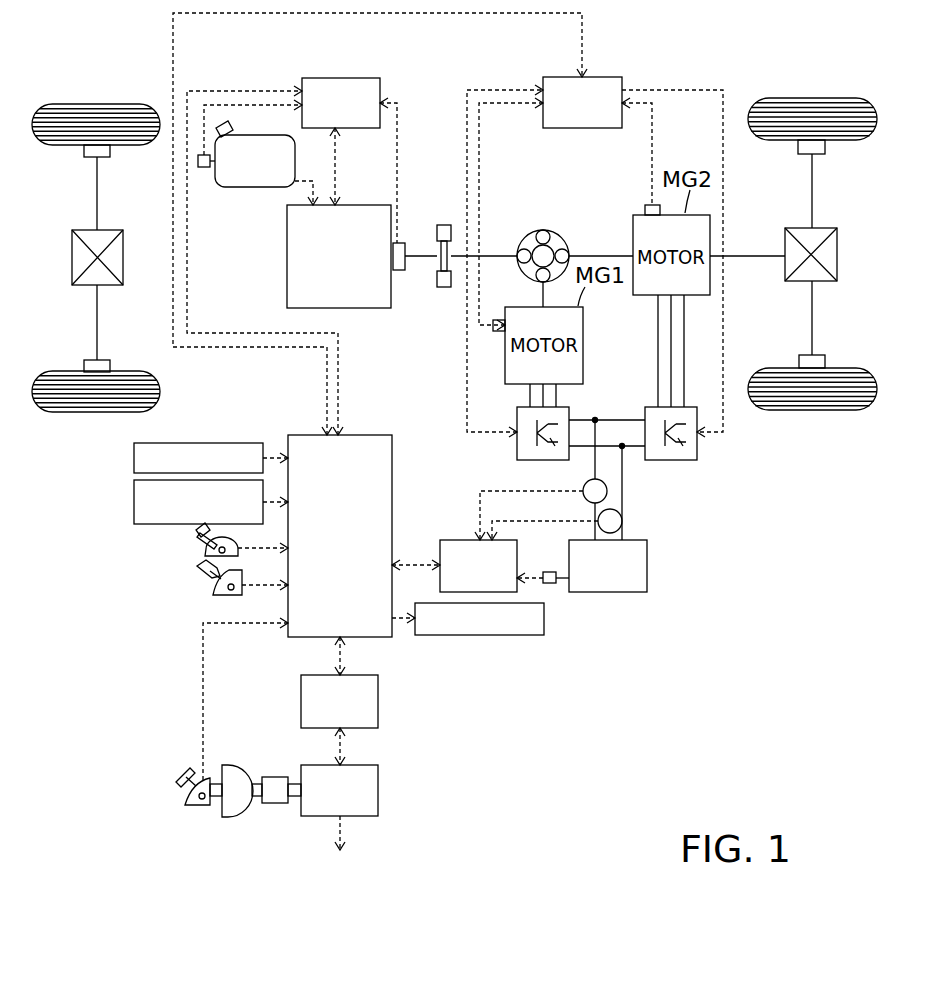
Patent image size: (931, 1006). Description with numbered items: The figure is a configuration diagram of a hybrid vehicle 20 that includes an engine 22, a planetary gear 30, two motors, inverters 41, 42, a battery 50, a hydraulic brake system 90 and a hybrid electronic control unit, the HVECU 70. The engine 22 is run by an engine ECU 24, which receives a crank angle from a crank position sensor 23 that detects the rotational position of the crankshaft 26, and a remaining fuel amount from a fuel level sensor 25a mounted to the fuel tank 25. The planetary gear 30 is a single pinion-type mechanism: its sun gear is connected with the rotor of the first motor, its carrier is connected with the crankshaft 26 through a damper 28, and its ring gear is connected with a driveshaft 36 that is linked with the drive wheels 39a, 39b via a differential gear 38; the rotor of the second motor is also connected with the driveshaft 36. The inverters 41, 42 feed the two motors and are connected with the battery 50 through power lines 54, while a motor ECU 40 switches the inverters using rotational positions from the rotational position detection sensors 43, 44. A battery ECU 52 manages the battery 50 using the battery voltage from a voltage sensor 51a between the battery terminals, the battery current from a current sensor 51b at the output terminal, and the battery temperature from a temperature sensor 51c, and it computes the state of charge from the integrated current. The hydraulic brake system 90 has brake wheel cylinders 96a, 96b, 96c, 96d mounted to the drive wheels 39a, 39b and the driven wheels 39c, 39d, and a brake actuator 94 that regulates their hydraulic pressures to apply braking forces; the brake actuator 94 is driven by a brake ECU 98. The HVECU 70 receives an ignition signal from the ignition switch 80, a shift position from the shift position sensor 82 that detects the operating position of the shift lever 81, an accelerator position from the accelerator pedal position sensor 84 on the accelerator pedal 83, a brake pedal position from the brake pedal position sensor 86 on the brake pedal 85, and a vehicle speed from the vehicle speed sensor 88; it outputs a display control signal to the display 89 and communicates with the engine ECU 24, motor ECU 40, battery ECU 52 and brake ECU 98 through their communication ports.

The hybrid vehicle 20 is at (711, 50).
The engine 22 is at (368, 204).
The crank position sensor 23 is at (398, 272).
The engine ECU 24 is at (341, 77).
The fuel tank 25 is at (257, 188).
The fuel level sensor 25a is at (205, 168).
The crankshaft 26 is at (416, 250).
The damper 28 is at (444, 224).
The planetary gear 30 is at (545, 230).
The driveshaft 36 is at (763, 253).
The differential gear 38 is at (824, 228).
The drive wheel 39a is at (813, 97).
The drive wheel 39b is at (811, 411).
The driven wheel 39c is at (98, 103).
The driven wheel 39d is at (93, 413).
The motor ECU 40 is at (596, 76).
The inverter 41 is at (570, 406).
The inverter 42 is at (692, 406).
The rotational position detection sensor 43 is at (500, 319).
The rotational position detection sensor 44 is at (648, 204).
The battery 50 is at (648, 563).
The voltage sensor 51a is at (623, 522).
The current sensor 51b is at (608, 492).
The temperature sensor 51c is at (548, 572).
The battery ECU 52 is at (462, 538).
The power line 54 is at (597, 467).
The HVECU 70 is at (364, 433).
The ignition switch 80 is at (134, 458).
The shift lever 81 is at (205, 540).
The shift position sensor 82 is at (205, 551).
The accelerator pedal 83 is at (200, 571).
The accelerator pedal position sensor 84 is at (215, 590).
The brake pedal 85 is at (185, 778).
The brake pedal position sensor 86 is at (185, 797).
The vehicle speed sensor 88 is at (134, 503).
The display 89 is at (546, 620).
The hydraulic brake system 90 is at (250, 712).
The brake actuator 94 is at (380, 790).
The brake wheel cylinder 96a is at (797, 145).
The brake wheel cylinder 96b is at (797, 361).
The brake wheel cylinder 96c is at (83, 151).
The brake wheel cylinder 96d is at (82, 365).
The brake ECU 98 is at (380, 700).